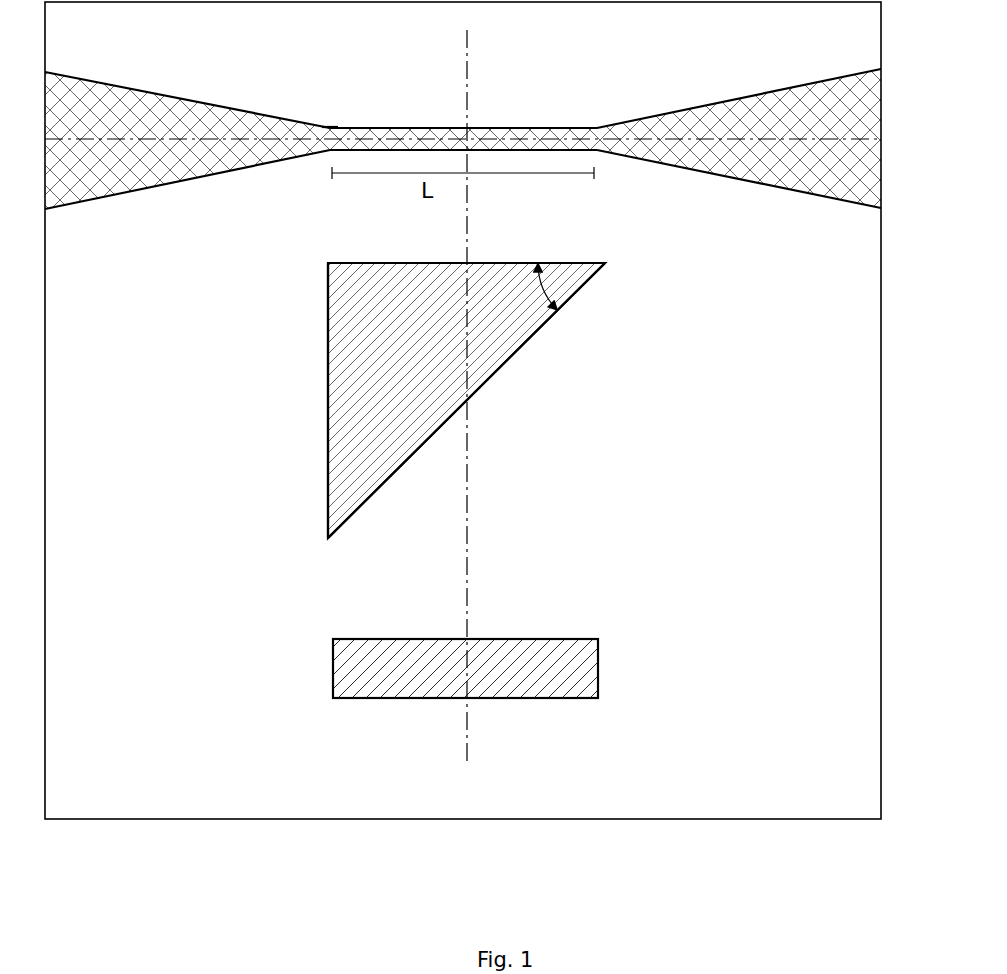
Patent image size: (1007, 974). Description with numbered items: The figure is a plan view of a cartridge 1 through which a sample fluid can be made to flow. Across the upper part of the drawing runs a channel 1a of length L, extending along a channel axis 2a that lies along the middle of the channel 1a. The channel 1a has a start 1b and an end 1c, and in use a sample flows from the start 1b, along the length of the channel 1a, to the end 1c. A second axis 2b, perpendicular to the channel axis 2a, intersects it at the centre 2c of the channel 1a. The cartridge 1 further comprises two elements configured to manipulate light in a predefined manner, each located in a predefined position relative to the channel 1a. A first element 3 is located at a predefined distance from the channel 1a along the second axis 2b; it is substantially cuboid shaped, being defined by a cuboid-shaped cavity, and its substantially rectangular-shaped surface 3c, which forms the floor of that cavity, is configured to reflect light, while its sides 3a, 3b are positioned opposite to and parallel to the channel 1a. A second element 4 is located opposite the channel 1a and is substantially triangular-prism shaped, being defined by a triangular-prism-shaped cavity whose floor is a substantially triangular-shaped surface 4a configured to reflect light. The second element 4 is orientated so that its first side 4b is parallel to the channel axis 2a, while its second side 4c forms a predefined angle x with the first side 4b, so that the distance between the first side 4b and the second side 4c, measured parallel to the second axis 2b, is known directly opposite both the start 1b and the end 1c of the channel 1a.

The cartridge 1 is at (884, 291).
The channel 1a is at (507, 128).
The start of the channel 1b is at (598, 128).
The end of the channel 1c is at (334, 127).
The channel axis 2a is at (220, 137).
The second axis 2b is at (468, 479).
The centre of the channel 2c is at (467, 137).
The first element 3 is at (498, 684).
The side of the first element 3a is at (567, 698).
The side of the first element 3b is at (493, 638).
The rectangular-shaped surface 3c is at (573, 658).
The second element 4 is at (457, 383).
The triangular-shaped surface 4a is at (375, 440).
The first side of the second element 4b is at (558, 263).
The second side of the second element 4c is at (543, 330).